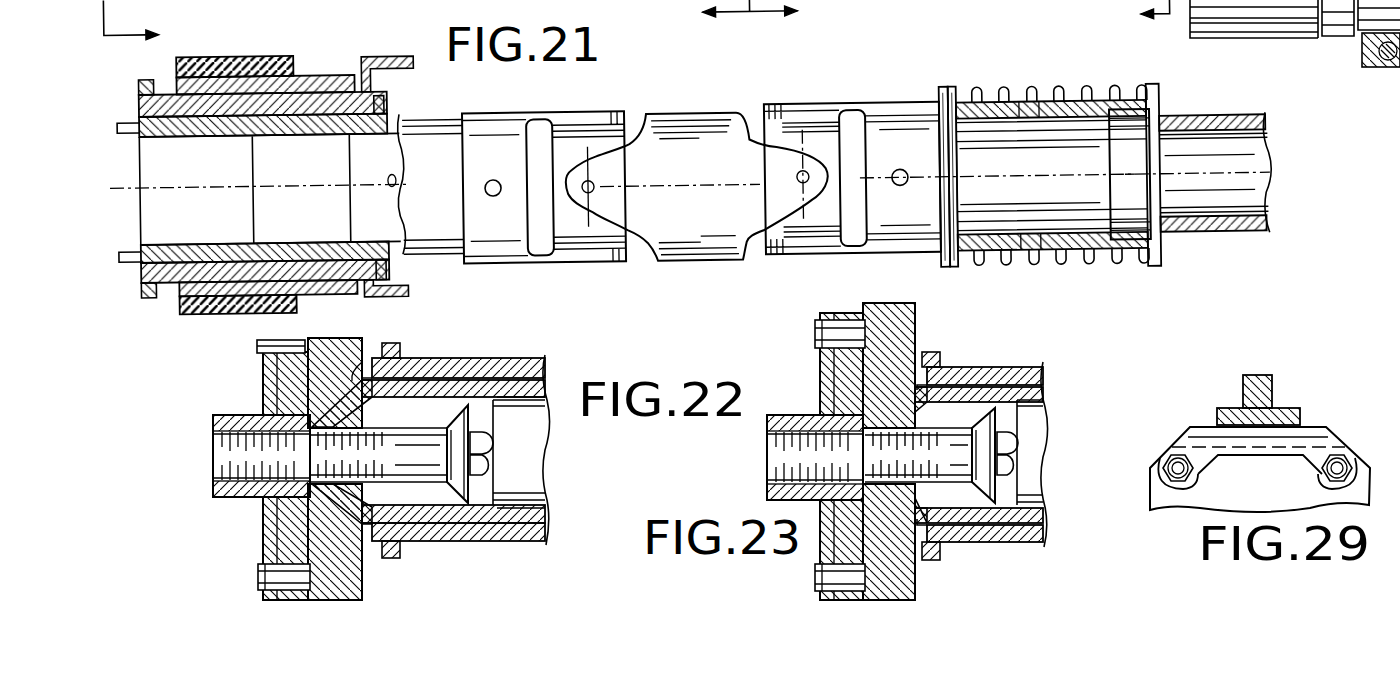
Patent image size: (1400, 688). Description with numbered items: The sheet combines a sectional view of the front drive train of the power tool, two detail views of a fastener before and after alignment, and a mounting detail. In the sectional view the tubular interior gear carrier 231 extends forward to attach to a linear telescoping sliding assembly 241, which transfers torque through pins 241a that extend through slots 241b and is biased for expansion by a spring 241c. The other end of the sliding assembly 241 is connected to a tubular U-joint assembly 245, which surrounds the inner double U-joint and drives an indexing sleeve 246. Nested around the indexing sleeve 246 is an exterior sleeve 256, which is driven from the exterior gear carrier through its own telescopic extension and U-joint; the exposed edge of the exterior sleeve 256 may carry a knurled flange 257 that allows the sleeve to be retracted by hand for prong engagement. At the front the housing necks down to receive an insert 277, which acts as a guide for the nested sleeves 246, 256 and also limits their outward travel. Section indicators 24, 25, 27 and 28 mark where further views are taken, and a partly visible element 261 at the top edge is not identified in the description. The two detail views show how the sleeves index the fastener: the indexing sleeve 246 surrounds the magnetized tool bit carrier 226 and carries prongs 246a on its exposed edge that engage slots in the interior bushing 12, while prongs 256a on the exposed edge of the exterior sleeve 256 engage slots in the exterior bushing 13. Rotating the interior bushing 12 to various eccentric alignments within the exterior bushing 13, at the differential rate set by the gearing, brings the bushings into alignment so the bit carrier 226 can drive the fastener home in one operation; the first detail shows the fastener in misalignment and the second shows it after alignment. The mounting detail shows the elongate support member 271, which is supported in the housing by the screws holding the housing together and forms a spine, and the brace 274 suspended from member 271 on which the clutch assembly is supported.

In FIG. 21, the section line for FIG. 24 is at (155, 30).
In FIG. 21, the section line for FIG. 25 is at (1131, 19).
In FIG. 21, the section line for FIG. 27 is at (724, 19).
In FIG. 21, the section line for FIG. 28 is at (818, 18).
In FIG. 21, the housing member 261 is at (1014, 7).
In FIG. 21, the insert 277 is at (318, 78).
In FIG. 21, the knurled flange 257 is at (151, 82).
In FIG. 22, the knurled flange 257 is at (398, 555).
In FIG. 23, the knurled flange 257 is at (924, 567).
In FIG. 21, the exterior sleeve 256 is at (150, 110).
In FIG. 22, the exterior sleeve 256 is at (540, 532).
In FIG. 23, the exterior sleeve 256 is at (1036, 534).
In FIG. 21, the indexing sleeve 246 is at (384, 110).
In FIG. 22, the indexing sleeve 246 is at (545, 512).
In FIG. 23, the indexing sleeve 246 is at (1040, 516).
In FIG. 21, the prongs 246a is at (126, 140).
In FIG. 22, the prongs 246a is at (340, 405).
In FIG. 21, the tubular U-joint assembly 245 is at (690, 120).
In FIG. 21, the linear telescoping sliding assembly 241 is at (1022, 270).
In FIG. 21, the pins 241a is at (1048, 116).
In FIG. 21, the slots 241b is at (1074, 120).
In FIG. 21, the spring 241c is at (977, 100).
In FIG. 21, the tubular interior gear carrier 231 is at (1214, 132).
In FIG. 22, the interior bushing 12 is at (345, 490).
In FIG. 23, the interior bushing 12 is at (900, 492).
In FIG. 22, the exterior bushing 13 is at (345, 540).
In FIG. 23, the exterior bushing 13 is at (926, 548).
In FIG. 22, the magnetized tool bit carrier 226 is at (537, 452).
In FIG. 23, the magnetized tool bit carrier 226 is at (1028, 454).
In FIG. 22, the prongs 256a is at (398, 372).
In FIG. 29, the elongate support member 271 is at (1262, 390).
In FIG. 29, the brace 274 is at (1318, 440).